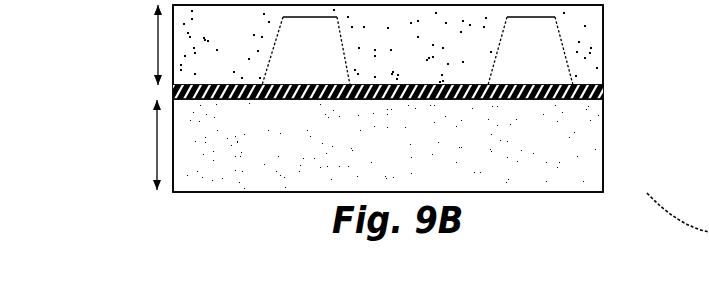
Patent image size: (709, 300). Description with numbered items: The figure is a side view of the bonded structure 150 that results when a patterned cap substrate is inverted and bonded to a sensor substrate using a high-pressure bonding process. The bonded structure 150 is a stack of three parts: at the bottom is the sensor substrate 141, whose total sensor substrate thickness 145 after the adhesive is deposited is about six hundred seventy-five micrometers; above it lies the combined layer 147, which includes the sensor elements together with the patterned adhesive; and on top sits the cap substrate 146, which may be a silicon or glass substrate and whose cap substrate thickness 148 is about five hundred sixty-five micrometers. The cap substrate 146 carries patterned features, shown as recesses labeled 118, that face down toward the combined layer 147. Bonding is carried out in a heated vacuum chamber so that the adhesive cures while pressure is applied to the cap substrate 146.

The conductive structure / pillar 118 is at (321, 69).
The sensor substrate 141 is at (583, 145).
The total sensor substrate thickness 145 is at (139, 145).
The cap substrate 146 is at (583, 52).
The combined layer 147 is at (583, 89).
The cap substrate thickness 148 is at (140, 45).
The bonded structure 150 is at (97, 217).